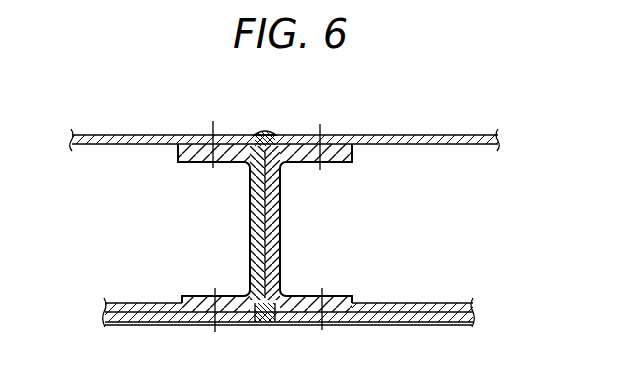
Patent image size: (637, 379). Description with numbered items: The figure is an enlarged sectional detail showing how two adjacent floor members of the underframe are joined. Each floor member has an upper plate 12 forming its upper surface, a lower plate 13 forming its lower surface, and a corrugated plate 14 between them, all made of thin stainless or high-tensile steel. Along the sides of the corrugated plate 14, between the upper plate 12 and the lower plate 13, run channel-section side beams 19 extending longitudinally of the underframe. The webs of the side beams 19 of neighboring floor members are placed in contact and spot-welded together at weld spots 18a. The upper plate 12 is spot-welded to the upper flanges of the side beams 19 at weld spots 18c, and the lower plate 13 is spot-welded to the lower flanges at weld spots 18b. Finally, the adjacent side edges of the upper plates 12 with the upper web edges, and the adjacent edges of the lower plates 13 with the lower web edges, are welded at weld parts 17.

The upper plate 12 is at (128, 135).
The lower plate 13 is at (155, 325).
The corrugated plate 14 is at (145, 303).
The weld part 17 is at (264, 131).
The weld spot 18a is at (245, 223).
The weld spot 18b is at (216, 328).
The weld spot 18c is at (214, 130).
The side beam 19 is at (226, 161).